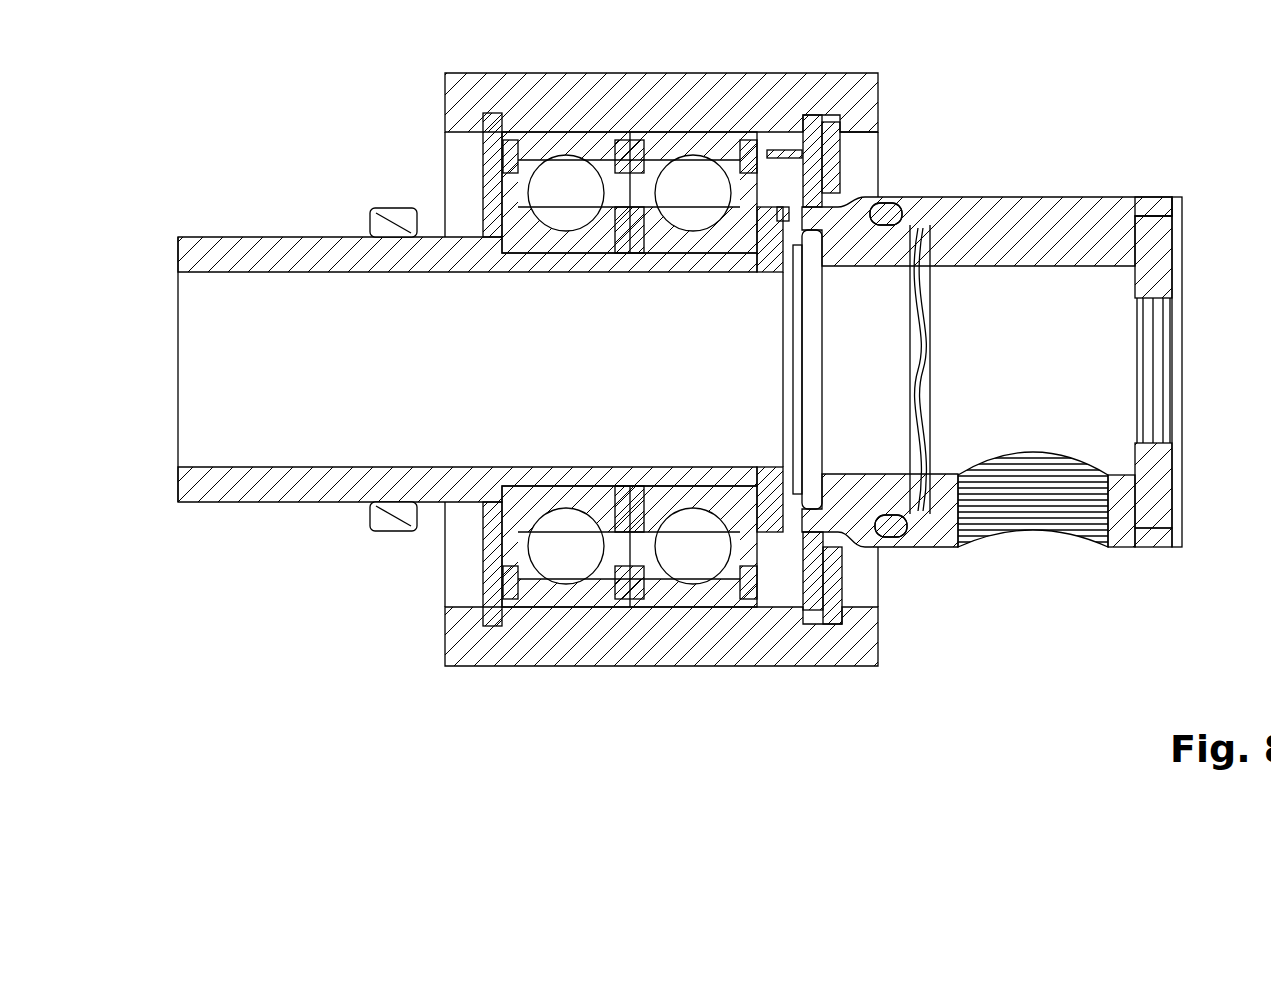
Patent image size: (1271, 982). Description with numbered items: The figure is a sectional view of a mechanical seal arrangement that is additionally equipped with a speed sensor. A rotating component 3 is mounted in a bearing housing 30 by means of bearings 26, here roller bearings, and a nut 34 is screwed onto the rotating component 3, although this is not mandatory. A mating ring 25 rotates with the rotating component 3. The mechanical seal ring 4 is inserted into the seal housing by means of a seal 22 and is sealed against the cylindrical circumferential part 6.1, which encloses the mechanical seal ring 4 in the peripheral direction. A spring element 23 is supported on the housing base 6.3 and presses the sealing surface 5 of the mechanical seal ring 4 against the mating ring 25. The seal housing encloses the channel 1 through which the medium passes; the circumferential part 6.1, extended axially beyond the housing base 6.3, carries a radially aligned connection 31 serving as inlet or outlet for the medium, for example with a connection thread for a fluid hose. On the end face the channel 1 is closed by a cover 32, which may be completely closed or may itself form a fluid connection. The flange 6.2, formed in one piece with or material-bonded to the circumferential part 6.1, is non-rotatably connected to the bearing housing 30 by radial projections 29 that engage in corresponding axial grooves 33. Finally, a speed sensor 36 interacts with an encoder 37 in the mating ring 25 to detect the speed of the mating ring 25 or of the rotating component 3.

The channel 1 is at (1110, 378).
The rotating component 3 is at (275, 240).
The mechanical seal ring 4 is at (858, 490).
The sealing surface 5 is at (797, 520).
The circumferential part 6.1 is at (917, 543).
The flange 6.2 is at (828, 170).
The housing base 6.3 is at (935, 240).
The seal 22 is at (888, 215).
The spring element 23 is at (928, 490).
The mating ring 25 is at (770, 252).
The bearings 26 is at (566, 160).
The radial projections 29 is at (812, 138).
The bearing housing 30 is at (555, 660).
The connection 31 is at (1062, 552).
The cover 32 is at (1155, 247).
The axial grooves 33 is at (870, 125).
The nut 34 is at (392, 522).
The speed sensor 36 is at (771, 148).
The encoder 37 is at (782, 207).